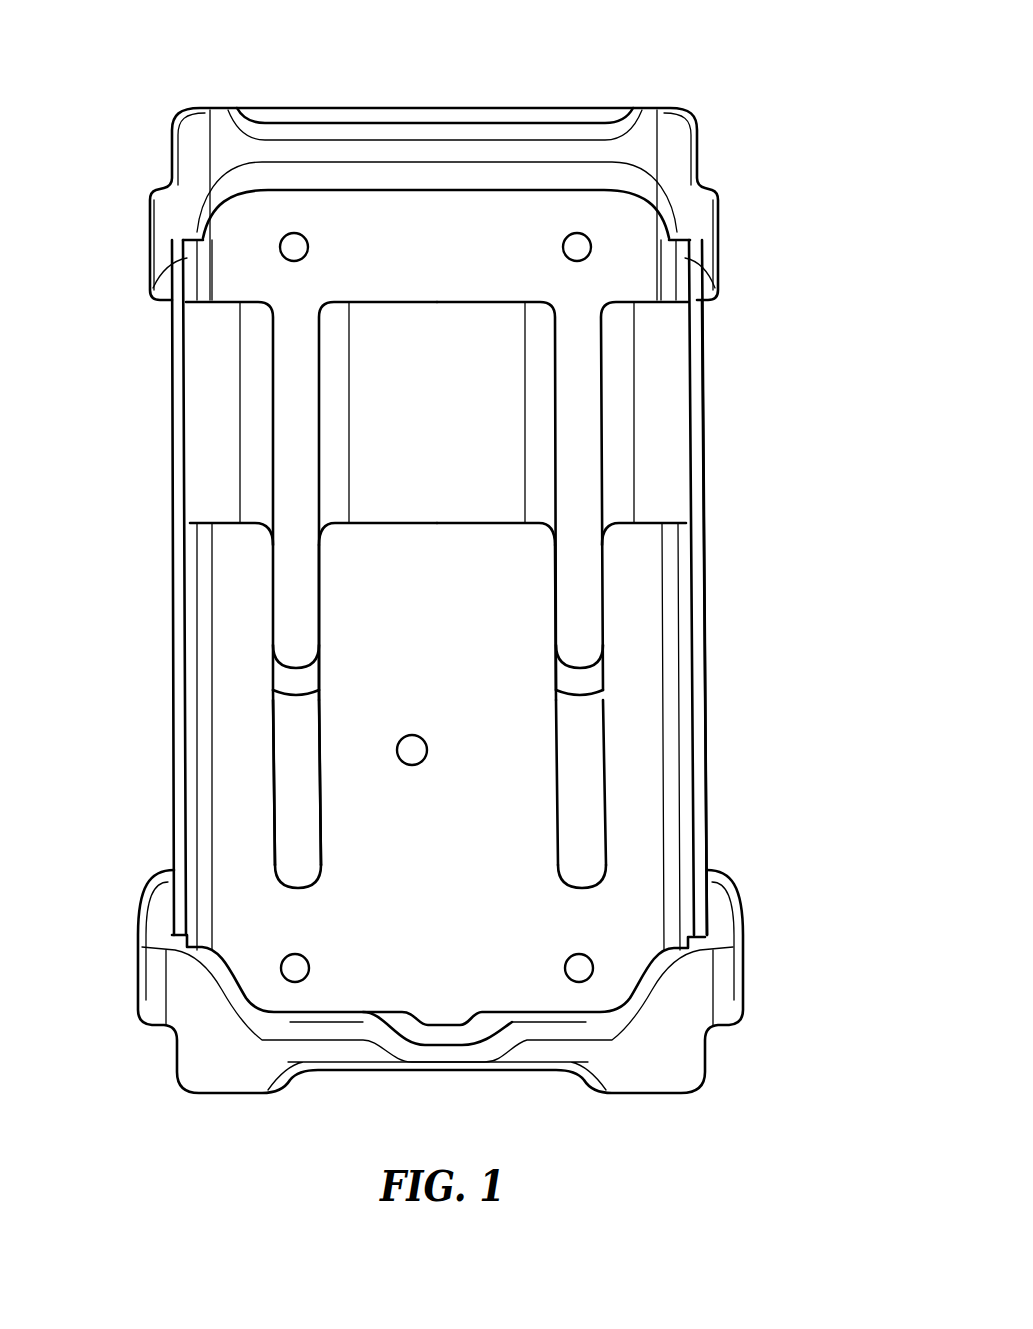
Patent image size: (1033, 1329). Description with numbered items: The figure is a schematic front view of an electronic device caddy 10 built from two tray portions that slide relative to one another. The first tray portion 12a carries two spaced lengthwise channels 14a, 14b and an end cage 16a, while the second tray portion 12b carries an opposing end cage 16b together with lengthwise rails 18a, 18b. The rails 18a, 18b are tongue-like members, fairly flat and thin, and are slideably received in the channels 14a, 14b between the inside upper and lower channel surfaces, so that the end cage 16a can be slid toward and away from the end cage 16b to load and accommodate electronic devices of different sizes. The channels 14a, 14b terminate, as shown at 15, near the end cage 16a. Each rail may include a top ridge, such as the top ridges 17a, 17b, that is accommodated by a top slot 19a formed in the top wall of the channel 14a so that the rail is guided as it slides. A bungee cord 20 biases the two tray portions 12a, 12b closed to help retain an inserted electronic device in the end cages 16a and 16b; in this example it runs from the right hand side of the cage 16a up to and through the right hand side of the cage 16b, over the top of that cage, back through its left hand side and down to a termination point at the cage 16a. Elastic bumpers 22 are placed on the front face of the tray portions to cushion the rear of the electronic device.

The electronic device caddy 10 is at (730, 66).
The first tray portion 12a is at (453, 636).
The second tray portion 12b is at (655, 470).
The lengthwise channel 14a is at (284, 797).
The lengthwise channel 14b is at (600, 772).
The channel termination 15 is at (300, 885).
The end cage 16a is at (680, 1055).
The end cage 16b is at (470, 148).
The top ridge 17a is at (290, 405).
The top ridge 17b is at (582, 358).
The lengthwise rail 18a is at (355, 406).
The lengthwise rail 18b is at (517, 348).
The top slot 19a is at (303, 733).
The bungee cord 20 is at (695, 408).
The elastic bumpers 22 is at (300, 245).